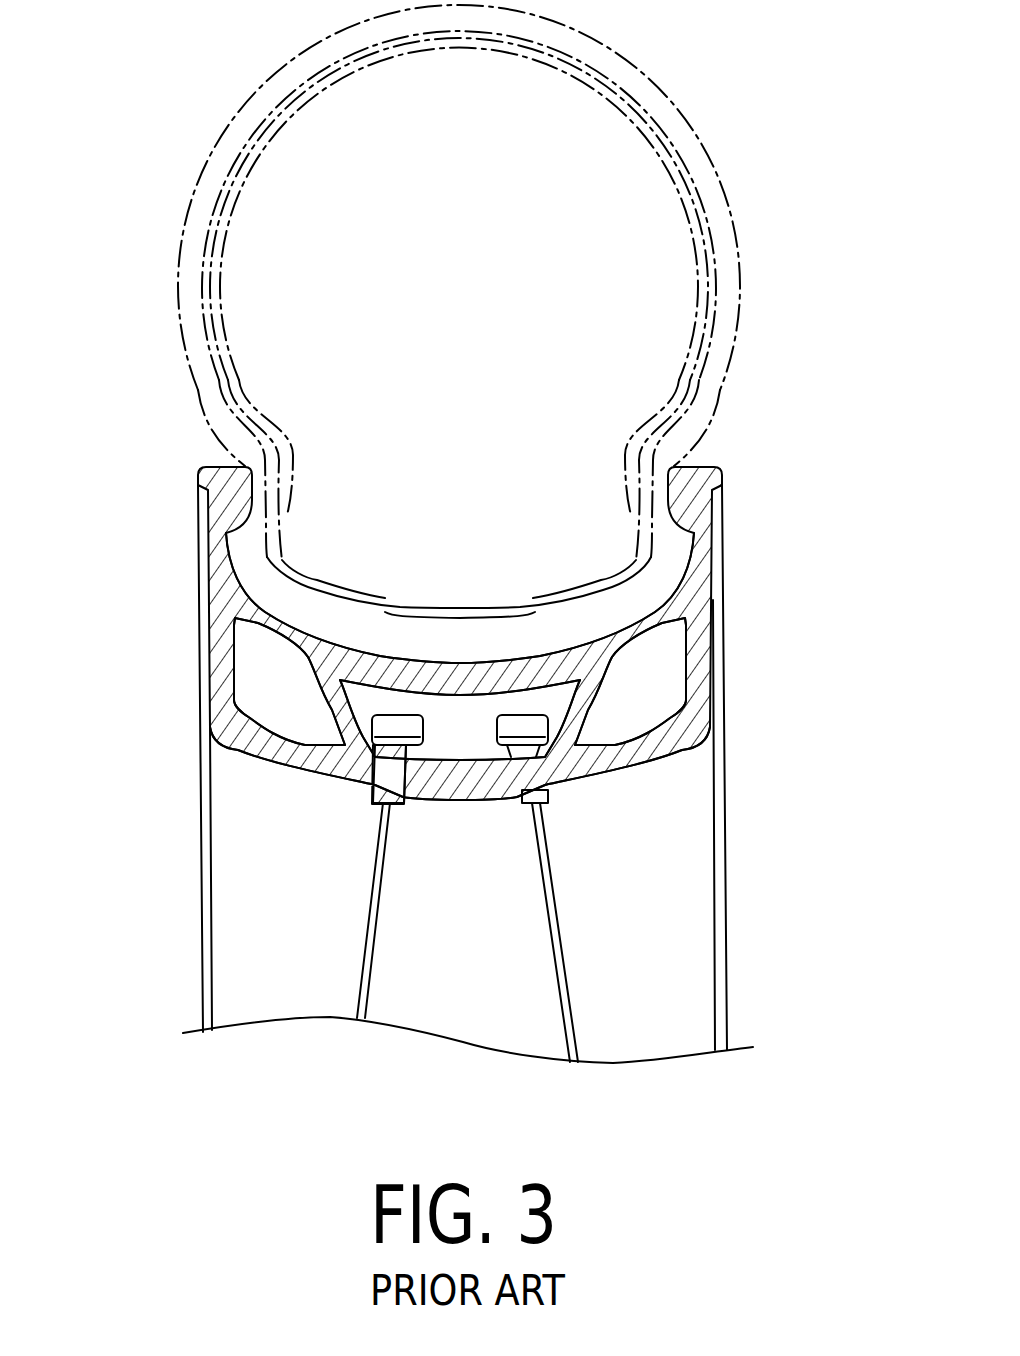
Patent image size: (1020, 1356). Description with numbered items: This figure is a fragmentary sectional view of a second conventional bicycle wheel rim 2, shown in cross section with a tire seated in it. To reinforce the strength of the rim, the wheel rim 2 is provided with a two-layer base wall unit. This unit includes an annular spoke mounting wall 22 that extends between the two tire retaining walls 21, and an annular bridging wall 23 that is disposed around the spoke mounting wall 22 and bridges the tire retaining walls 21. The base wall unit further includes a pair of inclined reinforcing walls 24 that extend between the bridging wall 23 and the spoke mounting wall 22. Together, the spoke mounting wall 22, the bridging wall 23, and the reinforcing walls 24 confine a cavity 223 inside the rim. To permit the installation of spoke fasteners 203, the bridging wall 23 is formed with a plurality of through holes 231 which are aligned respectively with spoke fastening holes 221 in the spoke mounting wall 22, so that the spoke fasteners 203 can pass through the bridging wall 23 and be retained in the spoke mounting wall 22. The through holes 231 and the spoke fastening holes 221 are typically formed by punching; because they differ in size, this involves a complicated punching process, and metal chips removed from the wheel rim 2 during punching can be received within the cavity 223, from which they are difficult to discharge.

The bicycle wheel rim 2 is at (733, 482).
The tire retaining walls 21 is at (217, 587).
The annular spoke mounting wall 22 is at (637, 750).
The annular bridging wall 23 is at (598, 643).
The inclined reinforcing walls 24 is at (325, 695).
The spoke fastening holes 221 is at (380, 782).
The cavity 223 is at (470, 745).
The through holes 231 is at (400, 668).
The spoke fasteners 203 is at (388, 772).